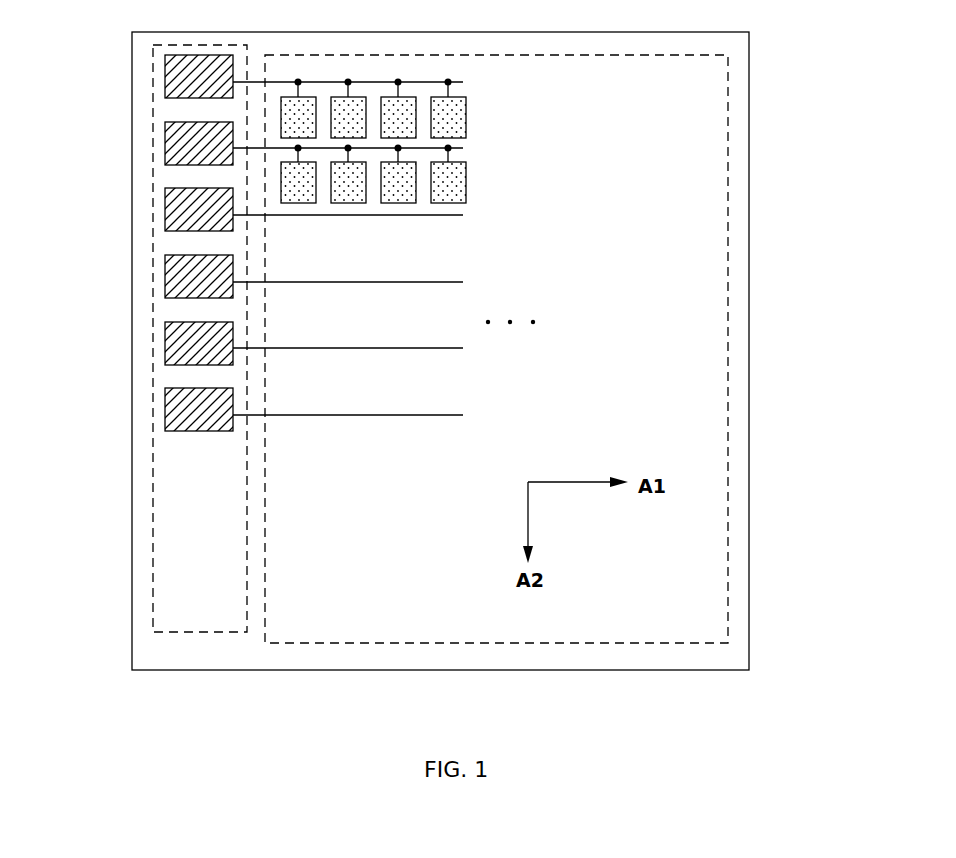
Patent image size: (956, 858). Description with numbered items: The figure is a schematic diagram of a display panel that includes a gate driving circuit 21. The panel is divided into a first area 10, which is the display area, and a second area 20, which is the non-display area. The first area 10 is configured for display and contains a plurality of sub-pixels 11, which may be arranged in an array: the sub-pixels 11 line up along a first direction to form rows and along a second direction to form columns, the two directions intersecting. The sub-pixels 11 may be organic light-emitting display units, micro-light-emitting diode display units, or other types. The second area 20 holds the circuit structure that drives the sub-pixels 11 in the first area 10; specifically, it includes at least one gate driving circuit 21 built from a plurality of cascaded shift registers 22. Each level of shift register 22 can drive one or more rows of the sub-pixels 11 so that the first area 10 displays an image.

The first area 10 is at (718, 102).
The second area 20 is at (740, 252).
The gate driving circuit 21 is at (155, 85).
The shift register 22 is at (167, 133).
The sub-pixel 11 is at (466, 112).